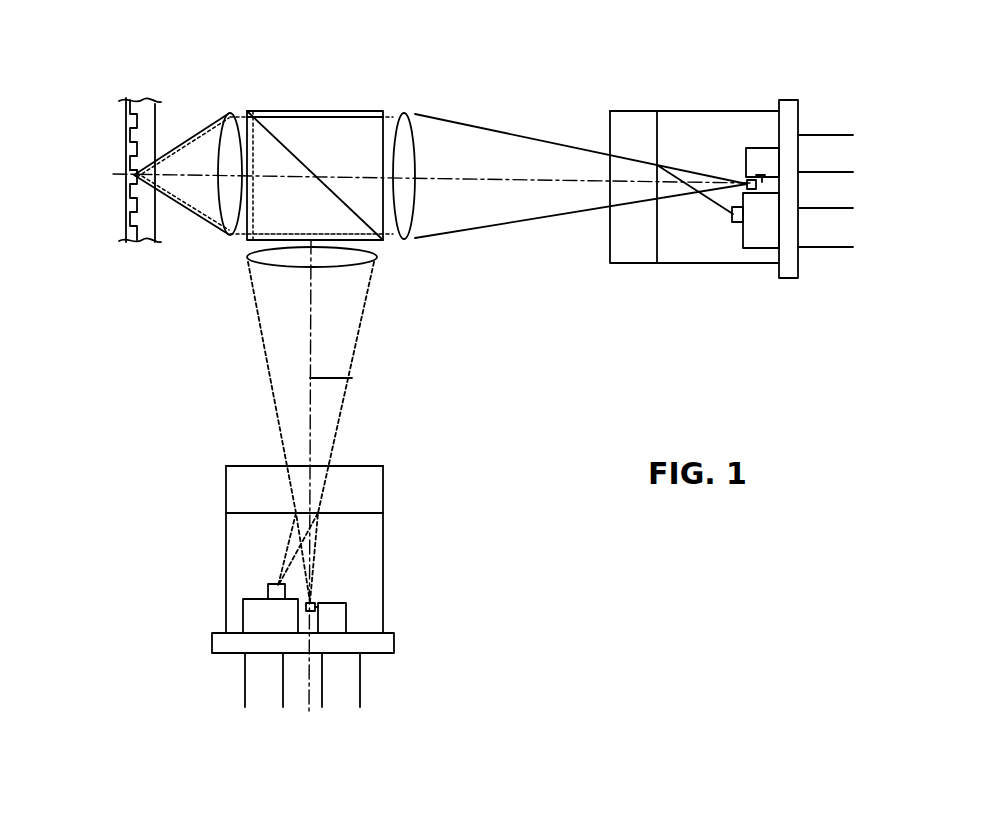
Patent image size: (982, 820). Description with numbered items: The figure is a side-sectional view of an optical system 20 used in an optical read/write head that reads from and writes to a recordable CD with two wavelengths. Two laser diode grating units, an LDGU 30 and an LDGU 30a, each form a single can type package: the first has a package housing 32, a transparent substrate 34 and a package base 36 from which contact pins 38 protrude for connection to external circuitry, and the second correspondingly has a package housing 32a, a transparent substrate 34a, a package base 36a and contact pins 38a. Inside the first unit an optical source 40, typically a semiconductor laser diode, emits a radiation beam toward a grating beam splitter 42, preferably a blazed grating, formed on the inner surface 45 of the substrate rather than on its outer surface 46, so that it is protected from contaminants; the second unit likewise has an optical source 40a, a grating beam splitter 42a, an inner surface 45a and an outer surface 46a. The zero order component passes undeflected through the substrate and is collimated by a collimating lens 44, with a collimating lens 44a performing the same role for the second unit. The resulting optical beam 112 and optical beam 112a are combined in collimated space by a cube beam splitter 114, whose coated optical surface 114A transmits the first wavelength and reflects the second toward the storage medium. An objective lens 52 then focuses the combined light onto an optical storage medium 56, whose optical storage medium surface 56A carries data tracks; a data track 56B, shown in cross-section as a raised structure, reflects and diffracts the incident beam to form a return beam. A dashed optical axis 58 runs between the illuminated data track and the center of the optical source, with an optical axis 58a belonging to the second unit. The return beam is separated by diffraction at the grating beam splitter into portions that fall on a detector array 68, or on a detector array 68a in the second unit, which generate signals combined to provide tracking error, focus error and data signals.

The optical system 20 is at (457, 113).
The LDGU 30 is at (688, 84).
The LDGU 30a is at (418, 505).
The package housing 32 is at (720, 112).
The package housing 32a is at (383, 593).
The transparent substrate 34 is at (628, 110).
The transparent substrate 34a is at (397, 482).
The package base 36 is at (790, 100).
The package base 36a is at (392, 655).
The contact pins 38 is at (858, 220).
The contact pins 38a is at (283, 700).
The optical source 40 is at (748, 182).
The optical source 40a is at (315, 599).
The grating beam splitter 42 is at (652, 190).
The grating beam splitter 42a is at (300, 512).
The collimating lens 44 is at (406, 242).
The collimating lens 44a is at (247, 256).
The inner surface 45 is at (657, 250).
The inner surface 45a is at (243, 513).
The outer surface 46 is at (610, 245).
The outer surface 46a is at (226, 470).
The objective lens 52 is at (229, 112).
The optical storage medium 56 is at (95, 151).
The optical storage medium surface 56A is at (127, 228).
The data track 56B is at (128, 175).
The optical axis 58 is at (416, 182).
The optical axis 58a is at (352, 378).
The detector array 68 is at (750, 219).
The detector array 68a is at (268, 592).
The optical beam 112 is at (512, 128).
The optical beam 112a is at (264, 343).
The beam splitter 114 is at (311, 140).
The optical surface 114A is at (343, 111).